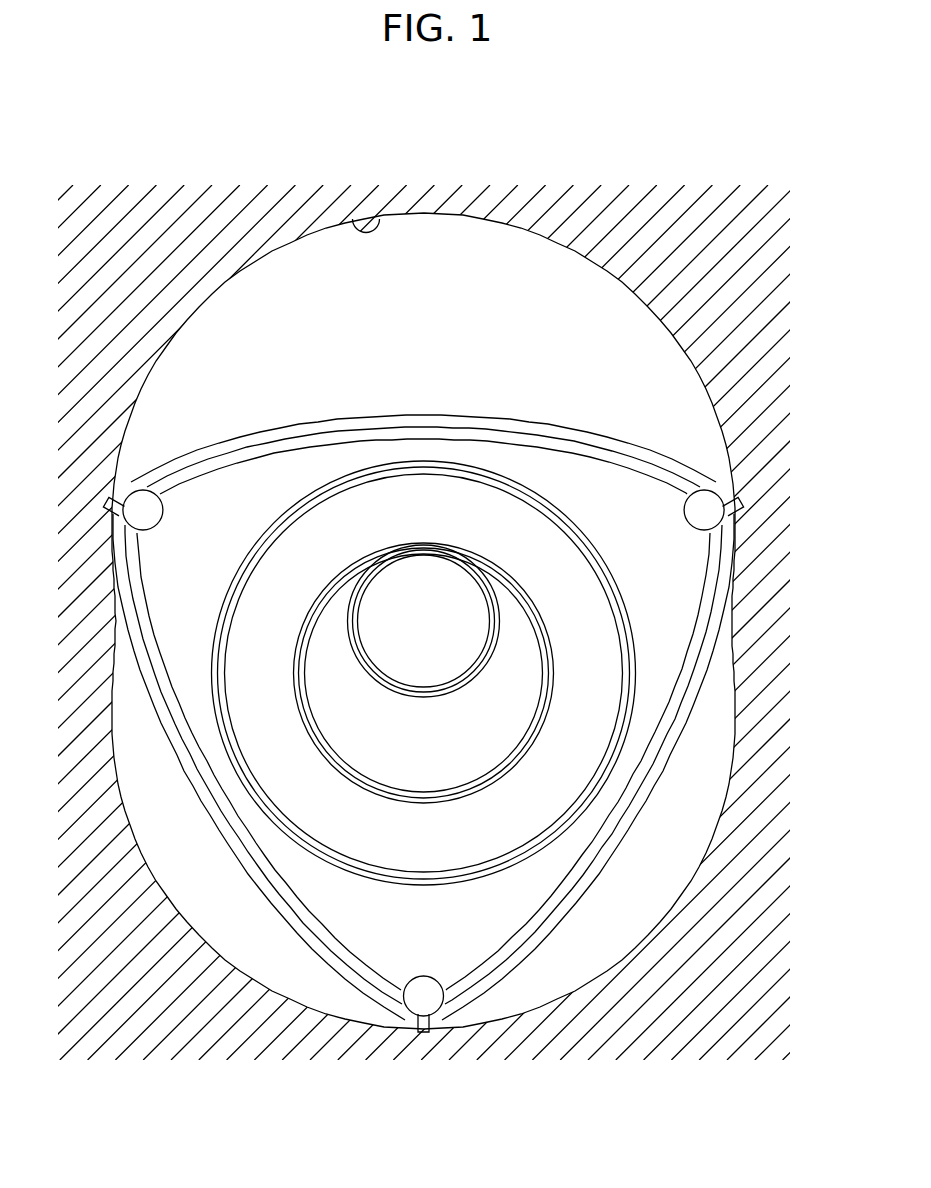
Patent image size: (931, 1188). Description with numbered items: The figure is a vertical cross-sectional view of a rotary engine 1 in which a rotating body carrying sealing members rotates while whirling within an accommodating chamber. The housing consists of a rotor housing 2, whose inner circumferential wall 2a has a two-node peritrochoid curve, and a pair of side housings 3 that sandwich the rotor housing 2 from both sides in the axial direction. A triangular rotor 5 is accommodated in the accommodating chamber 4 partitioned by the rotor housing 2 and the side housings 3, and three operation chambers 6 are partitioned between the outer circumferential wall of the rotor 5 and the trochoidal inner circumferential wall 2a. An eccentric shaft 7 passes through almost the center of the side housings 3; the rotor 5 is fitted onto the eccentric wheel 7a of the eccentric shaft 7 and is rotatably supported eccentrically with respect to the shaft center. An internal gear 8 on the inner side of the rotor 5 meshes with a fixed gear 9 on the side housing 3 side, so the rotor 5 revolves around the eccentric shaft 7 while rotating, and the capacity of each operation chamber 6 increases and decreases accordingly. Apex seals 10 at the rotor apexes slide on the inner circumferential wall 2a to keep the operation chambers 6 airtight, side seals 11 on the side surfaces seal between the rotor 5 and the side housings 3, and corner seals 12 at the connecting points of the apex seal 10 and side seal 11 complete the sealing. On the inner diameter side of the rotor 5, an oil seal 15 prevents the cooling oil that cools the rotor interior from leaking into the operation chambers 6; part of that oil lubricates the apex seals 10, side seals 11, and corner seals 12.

The rotary engine 1 is at (419, 157).
The rotor housing 2 is at (246, 264).
The inner circumferential wall 2a is at (353, 216).
The side housings 3 is at (459, 649).
The accommodating chamber 4 is at (566, 292).
The rotor 5 is at (601, 430).
The operation chambers 6 is at (411, 334).
The eccentric shaft 7 is at (435, 634).
The eccentric wheel 7a is at (495, 727).
The internal gear 8 is at (553, 673).
The fixed gear 9 is at (497, 610).
The apex seals 10 is at (731, 494).
The side seals 11 is at (662, 478).
The corner seals 12 is at (706, 518).
The oil seal 15 is at (216, 680).